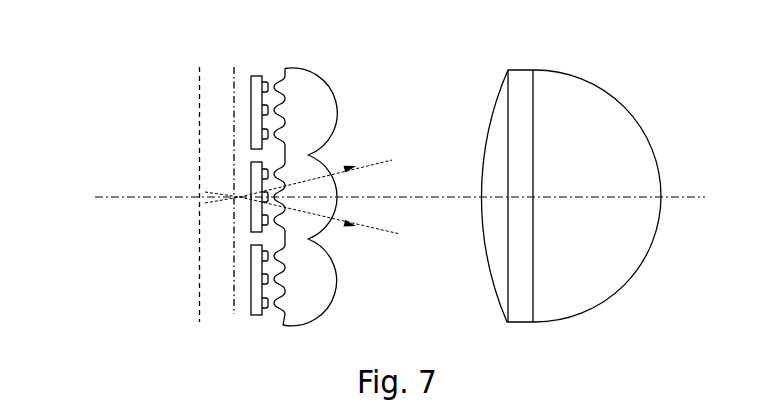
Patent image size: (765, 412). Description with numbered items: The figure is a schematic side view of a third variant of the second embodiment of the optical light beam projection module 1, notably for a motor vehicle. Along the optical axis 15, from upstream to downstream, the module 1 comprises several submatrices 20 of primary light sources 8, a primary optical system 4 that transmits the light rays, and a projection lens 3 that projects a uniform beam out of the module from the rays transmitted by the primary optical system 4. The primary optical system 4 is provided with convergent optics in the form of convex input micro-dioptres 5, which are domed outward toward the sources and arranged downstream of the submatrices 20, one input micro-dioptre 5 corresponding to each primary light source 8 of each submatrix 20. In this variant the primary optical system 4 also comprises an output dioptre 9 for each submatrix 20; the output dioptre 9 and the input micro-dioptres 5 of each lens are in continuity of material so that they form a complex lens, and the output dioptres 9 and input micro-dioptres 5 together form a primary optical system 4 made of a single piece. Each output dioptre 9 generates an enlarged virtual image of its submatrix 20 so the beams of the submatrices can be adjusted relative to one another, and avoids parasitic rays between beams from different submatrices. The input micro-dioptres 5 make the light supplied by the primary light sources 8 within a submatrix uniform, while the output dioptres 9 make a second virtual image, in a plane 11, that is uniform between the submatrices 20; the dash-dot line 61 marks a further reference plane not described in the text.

The optical light beam projection module 1 is at (107, 127).
The projection lens 3 is at (558, 118).
The primary optical system 4 is at (331, 179).
The input micro-dioptre 5 is at (262, 277).
The primary light source 8 is at (267, 135).
The output dioptre 9 is at (338, 203).
The plane 11 is at (200, 113).
The optical axis 15 is at (677, 197).
The submatrix of primary light sources 20 is at (258, 103).
The reference plane 61 is at (235, 92).